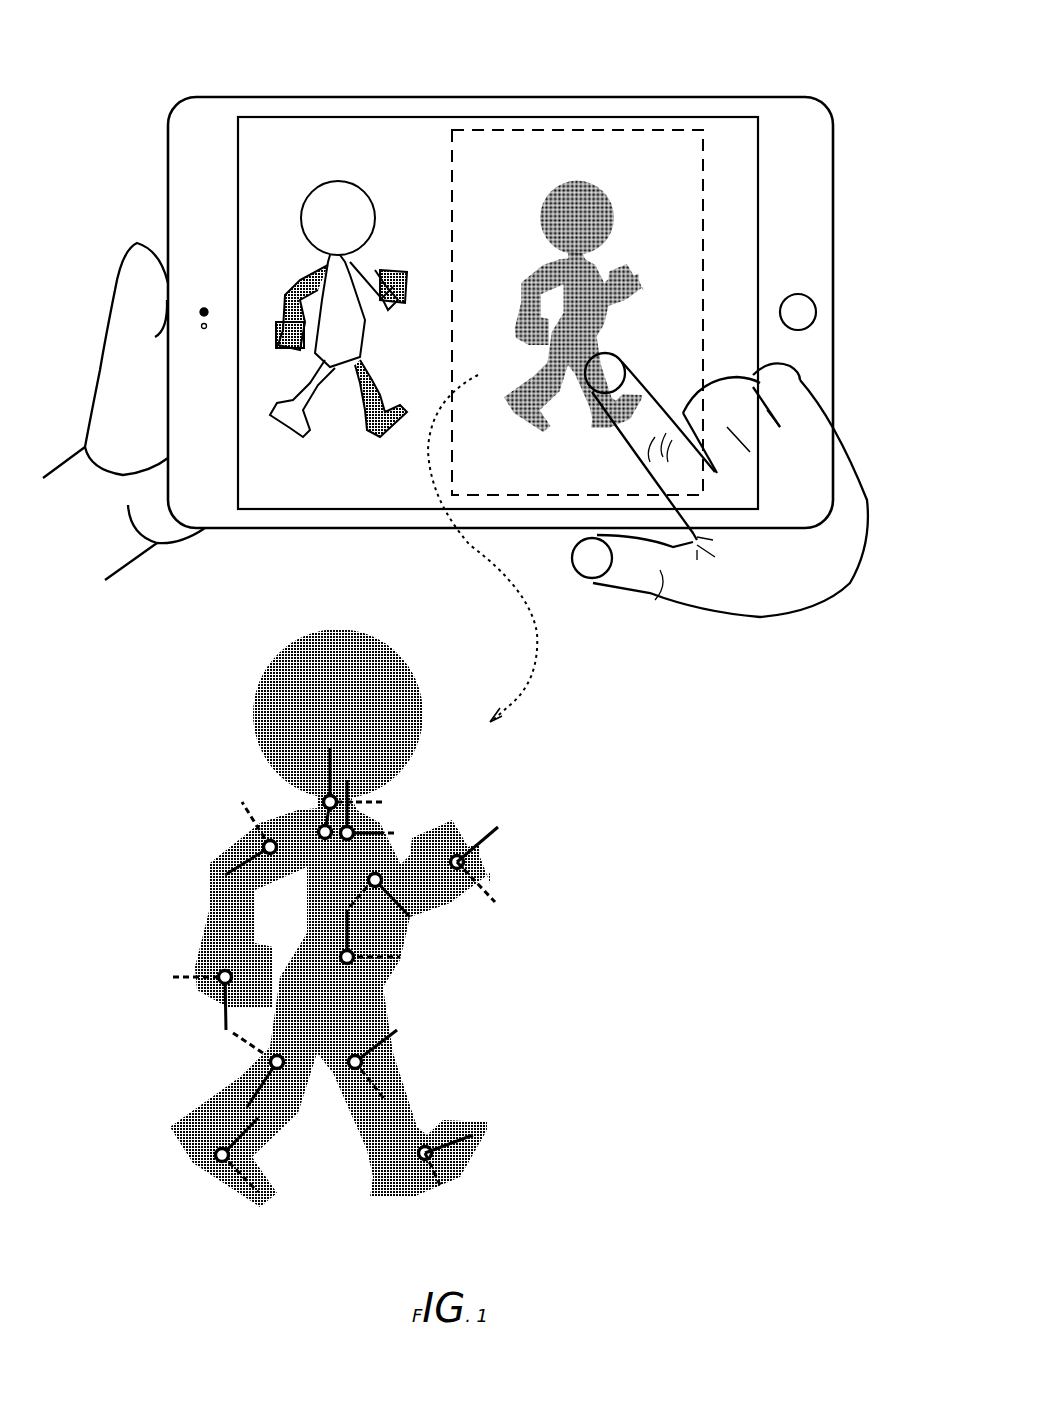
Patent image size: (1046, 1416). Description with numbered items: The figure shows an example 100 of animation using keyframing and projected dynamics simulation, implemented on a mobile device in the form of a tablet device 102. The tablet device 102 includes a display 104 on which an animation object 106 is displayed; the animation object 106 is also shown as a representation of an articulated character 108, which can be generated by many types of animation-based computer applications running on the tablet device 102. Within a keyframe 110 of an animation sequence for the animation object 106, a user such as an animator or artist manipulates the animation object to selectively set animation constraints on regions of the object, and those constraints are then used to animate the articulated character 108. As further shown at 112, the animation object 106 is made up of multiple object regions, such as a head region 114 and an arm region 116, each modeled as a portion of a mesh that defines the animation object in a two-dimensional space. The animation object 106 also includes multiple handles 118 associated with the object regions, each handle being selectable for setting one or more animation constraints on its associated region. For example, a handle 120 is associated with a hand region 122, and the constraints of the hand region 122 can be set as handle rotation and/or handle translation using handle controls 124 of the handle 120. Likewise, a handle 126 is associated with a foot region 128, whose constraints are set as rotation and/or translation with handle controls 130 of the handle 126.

The example of animation using keyframing and projected dynamics simulation 100 is at (637, 63).
The tablet device 102 is at (760, 97).
The display 104 is at (378, 130).
The animation object 106 is at (558, 173).
The articulated character 108 is at (315, 175).
The keyframe 110 is at (452, 147).
The animation object with object regions and handles 112 is at (605, 746).
The head region 114 is at (383, 680).
The arm region 116 is at (207, 888).
The handles 118 is at (255, 1058).
The handle 120 is at (463, 853).
The hand region 122 is at (435, 835).
The handle controls 124 is at (492, 838).
The handle 126 is at (428, 1142).
The foot region 128 is at (402, 1187).
The handle controls 130 is at (470, 1145).